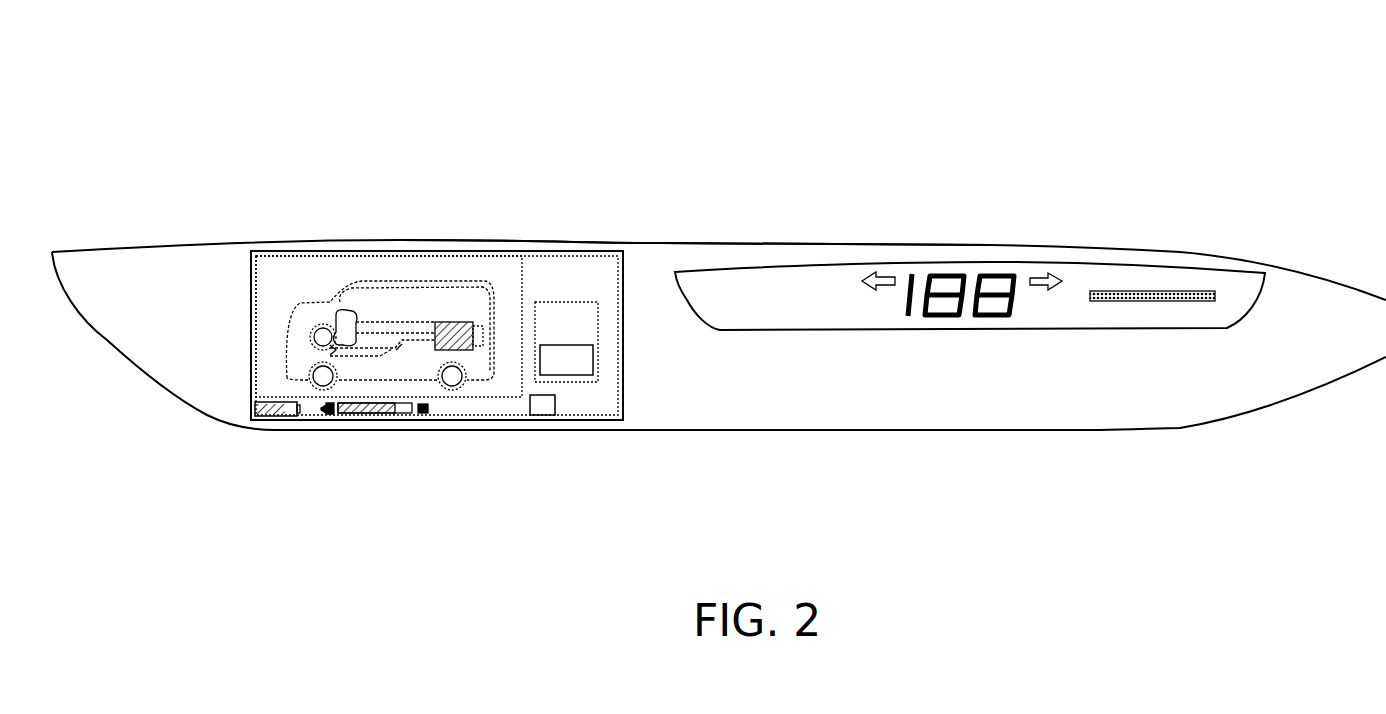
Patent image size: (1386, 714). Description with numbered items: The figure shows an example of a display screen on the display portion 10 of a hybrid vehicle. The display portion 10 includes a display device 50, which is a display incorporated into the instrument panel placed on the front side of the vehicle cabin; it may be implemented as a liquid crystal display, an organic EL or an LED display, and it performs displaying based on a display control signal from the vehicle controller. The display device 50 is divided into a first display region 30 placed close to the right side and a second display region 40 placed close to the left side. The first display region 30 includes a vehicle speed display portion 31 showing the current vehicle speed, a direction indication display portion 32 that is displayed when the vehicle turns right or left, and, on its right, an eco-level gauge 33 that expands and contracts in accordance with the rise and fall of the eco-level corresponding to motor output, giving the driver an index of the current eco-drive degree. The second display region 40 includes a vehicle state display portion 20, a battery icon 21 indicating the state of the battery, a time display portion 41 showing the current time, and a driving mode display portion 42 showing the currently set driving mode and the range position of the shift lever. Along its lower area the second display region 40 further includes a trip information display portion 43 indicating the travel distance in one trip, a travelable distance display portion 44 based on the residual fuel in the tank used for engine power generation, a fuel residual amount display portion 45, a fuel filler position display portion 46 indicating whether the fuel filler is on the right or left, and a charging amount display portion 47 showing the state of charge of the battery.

The display portion 10 is at (852, 125).
The display device 50 is at (665, 238).
The vehicle state display portion 20 is at (380, 250).
The battery icon 21 is at (443, 322).
The first display region 30 is at (970, 340).
The vehicle speed display portion 31 is at (950, 272).
The direction indication display portion 32 is at (883, 270).
The eco-level gauge 33 is at (1150, 291).
The second display region 40 is at (632, 407).
The time display portion 41 is at (567, 262).
The driving mode display portion 42 is at (588, 302).
The trip information display portion 43 is at (578, 412).
The travelable distance display portion 44 is at (445, 410).
The fuel residual amount display portion 45 is at (380, 410).
The fuel filler position display portion 46 is at (328, 410).
The charging amount display portion 47 is at (270, 415).